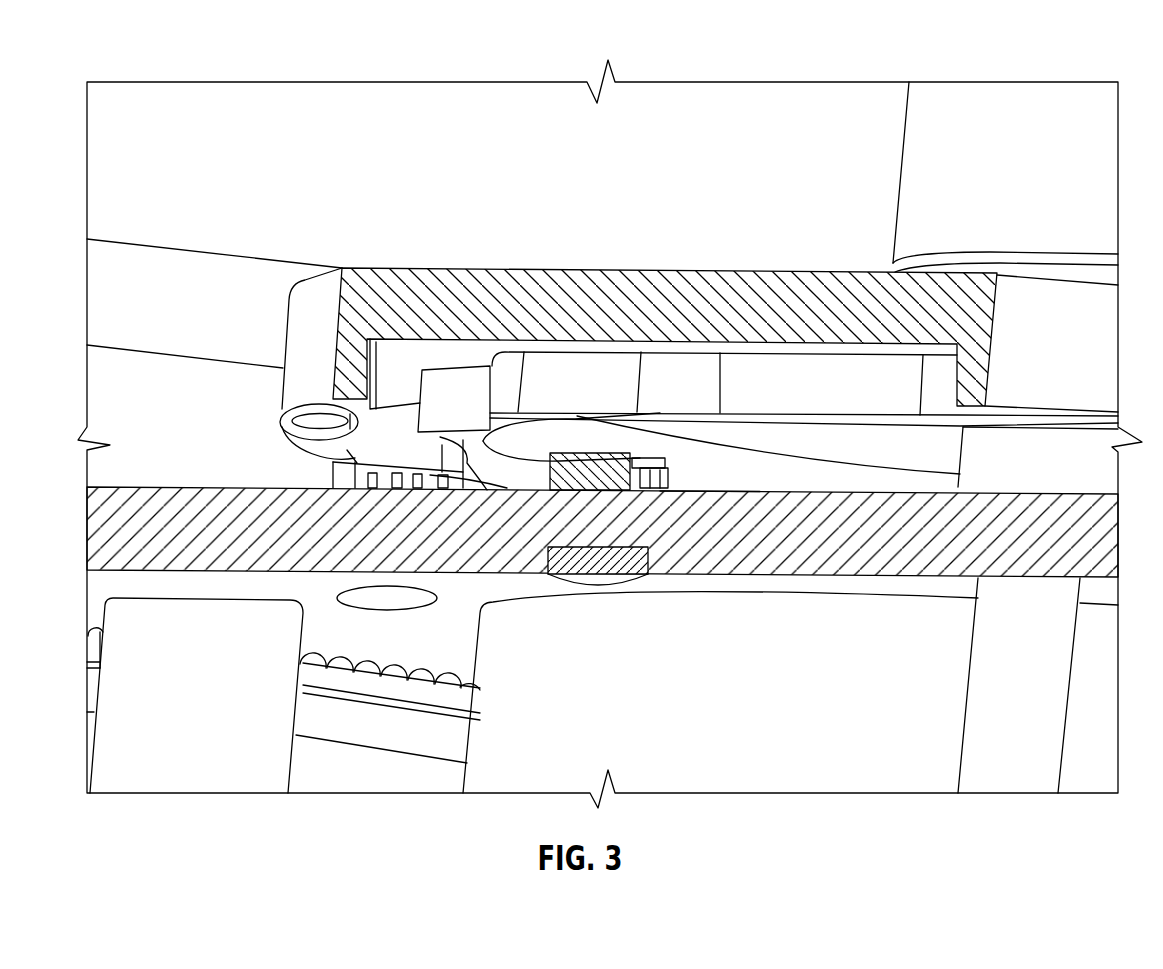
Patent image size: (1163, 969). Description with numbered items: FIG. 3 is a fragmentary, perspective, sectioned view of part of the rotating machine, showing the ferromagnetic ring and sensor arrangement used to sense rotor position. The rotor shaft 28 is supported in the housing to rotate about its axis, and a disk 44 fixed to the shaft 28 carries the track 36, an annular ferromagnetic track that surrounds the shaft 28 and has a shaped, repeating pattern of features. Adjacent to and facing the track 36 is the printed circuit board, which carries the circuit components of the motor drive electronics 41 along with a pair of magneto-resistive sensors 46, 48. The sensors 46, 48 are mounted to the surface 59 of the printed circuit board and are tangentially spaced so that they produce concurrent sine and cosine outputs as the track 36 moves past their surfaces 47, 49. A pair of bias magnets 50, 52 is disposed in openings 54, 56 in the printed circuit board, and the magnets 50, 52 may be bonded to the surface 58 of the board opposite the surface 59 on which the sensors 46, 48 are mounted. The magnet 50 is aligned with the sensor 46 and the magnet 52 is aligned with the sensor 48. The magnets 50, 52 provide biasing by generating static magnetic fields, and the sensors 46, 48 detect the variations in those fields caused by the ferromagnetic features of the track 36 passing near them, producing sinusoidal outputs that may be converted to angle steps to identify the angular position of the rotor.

The shaft 28 is at (983, 112).
The track 36 is at (413, 365).
The motor drive electronics 41 is at (858, 545).
The disk 44 is at (572, 298).
The sensor 46 is at (625, 453).
The surface 47 is at (603, 450).
The sensor 48 is at (335, 393).
The surface 49 is at (382, 463).
The bias magnet 50 is at (643, 558).
The bias magnet 52 is at (385, 597).
The opening 54 is at (552, 558).
The opening 56 is at (425, 602).
The surface 58 is at (272, 583).
The surface 59 is at (702, 492).